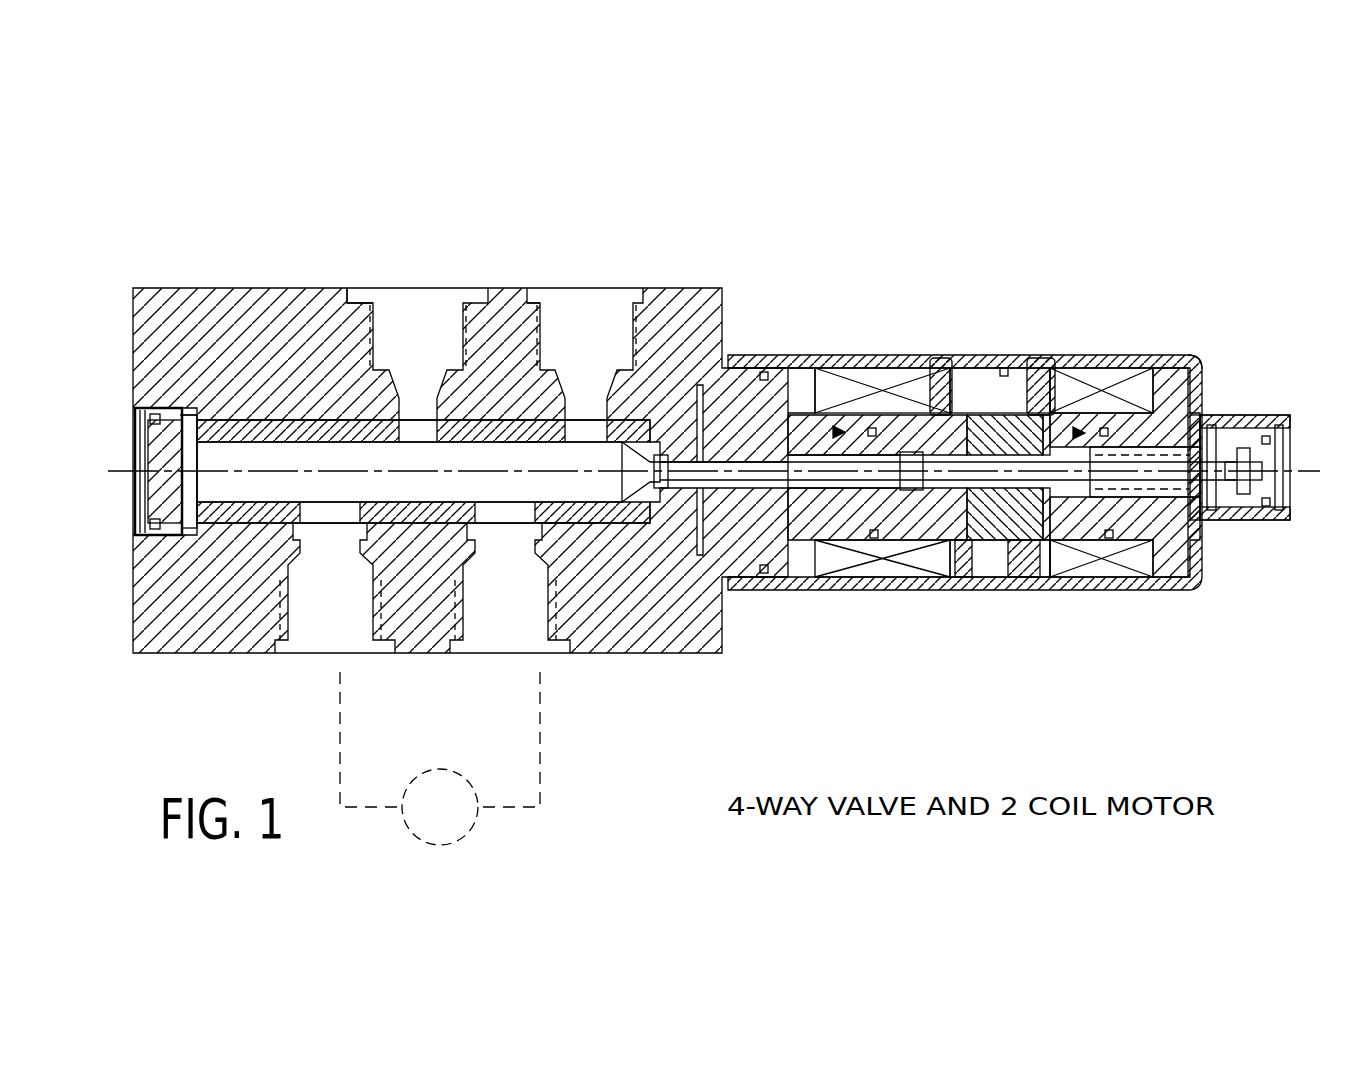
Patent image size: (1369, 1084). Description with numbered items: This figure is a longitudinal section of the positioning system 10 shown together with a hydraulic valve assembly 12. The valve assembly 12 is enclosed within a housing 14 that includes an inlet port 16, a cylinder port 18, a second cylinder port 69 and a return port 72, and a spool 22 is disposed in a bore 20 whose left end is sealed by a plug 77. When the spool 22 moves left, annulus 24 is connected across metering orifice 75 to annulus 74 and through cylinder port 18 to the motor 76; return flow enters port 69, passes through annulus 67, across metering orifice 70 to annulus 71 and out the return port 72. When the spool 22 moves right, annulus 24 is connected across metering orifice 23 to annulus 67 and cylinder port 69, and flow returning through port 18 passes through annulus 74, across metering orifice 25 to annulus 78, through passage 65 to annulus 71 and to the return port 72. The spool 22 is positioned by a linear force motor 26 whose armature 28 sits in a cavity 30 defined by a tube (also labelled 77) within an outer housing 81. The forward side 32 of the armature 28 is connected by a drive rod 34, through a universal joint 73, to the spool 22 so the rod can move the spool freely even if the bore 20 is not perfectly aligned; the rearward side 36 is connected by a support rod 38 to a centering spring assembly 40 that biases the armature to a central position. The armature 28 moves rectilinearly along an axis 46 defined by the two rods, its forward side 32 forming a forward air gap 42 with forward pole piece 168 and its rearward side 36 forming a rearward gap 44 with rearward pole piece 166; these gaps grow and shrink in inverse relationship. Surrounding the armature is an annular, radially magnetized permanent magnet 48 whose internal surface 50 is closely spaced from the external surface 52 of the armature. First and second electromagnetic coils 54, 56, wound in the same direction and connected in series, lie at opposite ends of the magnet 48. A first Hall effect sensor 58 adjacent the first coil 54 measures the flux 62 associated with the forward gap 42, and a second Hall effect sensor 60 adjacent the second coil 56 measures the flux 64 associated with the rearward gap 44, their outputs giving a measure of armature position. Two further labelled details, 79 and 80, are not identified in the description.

The positioning system 10 is at (1272, 758).
The hydraulic valve assembly 12 is at (672, 292).
The housing 14 is at (167, 290).
The inlet port 16 is at (430, 303).
The cylinder port 18 is at (340, 644).
The bore 20 is at (200, 432).
The spool 22 is at (213, 427).
The metering orifice 23 is at (505, 412).
The annulus 24 is at (336, 300).
The metering orifice 25 is at (220, 515).
The linear force motor 26 is at (1203, 352).
The armature 28 is at (1035, 580).
The cavity 30 is at (1073, 580).
The forward side 32 is at (918, 368).
The drive rod 34 is at (735, 385).
The rearward side 36 is at (1078, 368).
The support rod 38 is at (1135, 582).
The spring assembly 40 is at (1200, 517).
The forward gap 42 is at (912, 428).
The rearward gap 44 is at (1045, 360).
The axis 46 is at (1305, 472).
The permanent magnet 48 is at (970, 580).
The internal surface 50 is at (963, 370).
The external surface 52 is at (943, 360).
The first electromagnetic coil 54 is at (905, 580).
The second electromagnetic coil 56 is at (1105, 582).
The first Hall effect sensor 58 is at (760, 372).
The second Hall effect sensor 60 is at (1187, 360).
The flux 62 is at (817, 368).
The flux 64 is at (1097, 368).
The passage 65 is at (232, 515).
The annulus 67 is at (517, 417).
The cylinder port 69 is at (528, 644).
The metering orifice 70 is at (533, 413).
The annulus 71 is at (570, 518).
The return port 72 is at (585, 303).
The universal joint 73 is at (663, 488).
The annulus 74 is at (303, 425).
The metering orifice 75 is at (335, 425).
The motor 76 is at (440, 758).
The plug 77 is at (178, 415).
The annulus 78 is at (235, 427).
The O-ring 79 is at (150, 528).
The O-ring 80 is at (150, 420).
The outer housing 81 is at (1120, 356).
The rearward pole piece 166 is at (1200, 557).
The forward pole piece 168 is at (833, 580).